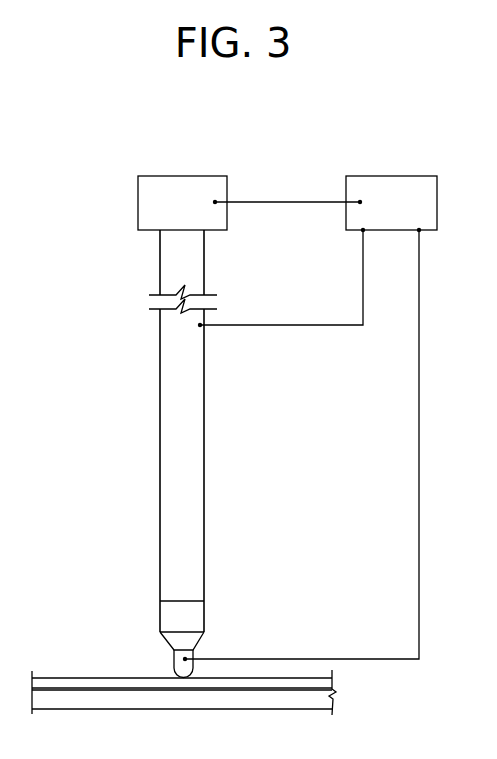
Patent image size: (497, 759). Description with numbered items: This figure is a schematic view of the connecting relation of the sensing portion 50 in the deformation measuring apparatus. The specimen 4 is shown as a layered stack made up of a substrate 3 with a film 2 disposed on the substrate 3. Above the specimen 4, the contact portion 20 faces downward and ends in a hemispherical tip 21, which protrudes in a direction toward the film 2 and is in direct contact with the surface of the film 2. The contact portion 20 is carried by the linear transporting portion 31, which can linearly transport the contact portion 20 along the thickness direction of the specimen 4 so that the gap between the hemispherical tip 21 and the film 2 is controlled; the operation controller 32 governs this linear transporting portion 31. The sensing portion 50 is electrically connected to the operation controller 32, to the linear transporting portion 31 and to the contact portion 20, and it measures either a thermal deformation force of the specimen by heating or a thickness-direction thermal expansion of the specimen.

The film 2 is at (317, 680).
The substrate 3 is at (317, 703).
The specimen 4 is at (217, 694).
The contact portion 20 is at (177, 652).
The hemispherical tip 21 is at (180, 670).
The linear transporting portion 31 is at (205, 452).
The operation controller 32 is at (182, 203).
The sensing portion 50 is at (391, 203).